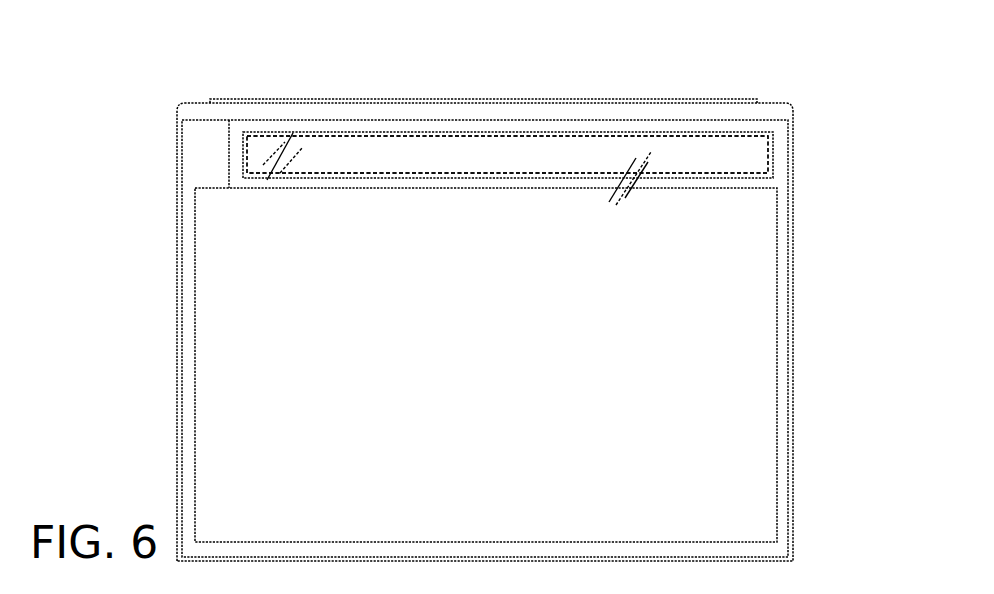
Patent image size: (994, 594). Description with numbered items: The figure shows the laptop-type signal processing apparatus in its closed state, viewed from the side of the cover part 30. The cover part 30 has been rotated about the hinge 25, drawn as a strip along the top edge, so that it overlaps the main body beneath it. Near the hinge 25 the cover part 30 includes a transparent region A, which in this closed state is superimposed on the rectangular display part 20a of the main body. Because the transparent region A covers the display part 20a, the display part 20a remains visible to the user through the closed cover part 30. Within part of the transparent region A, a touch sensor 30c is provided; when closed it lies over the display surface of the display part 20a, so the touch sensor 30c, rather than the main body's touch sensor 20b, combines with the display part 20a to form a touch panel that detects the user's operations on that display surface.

The hinge 25 is at (528, 101).
The cover part 30 is at (770, 388).
The display part 20a is at (760, 157).
The touch sensor 30c is at (772, 146).
The touch sensor 20b is at (507, 154).
The transparent region A is at (703, 122).